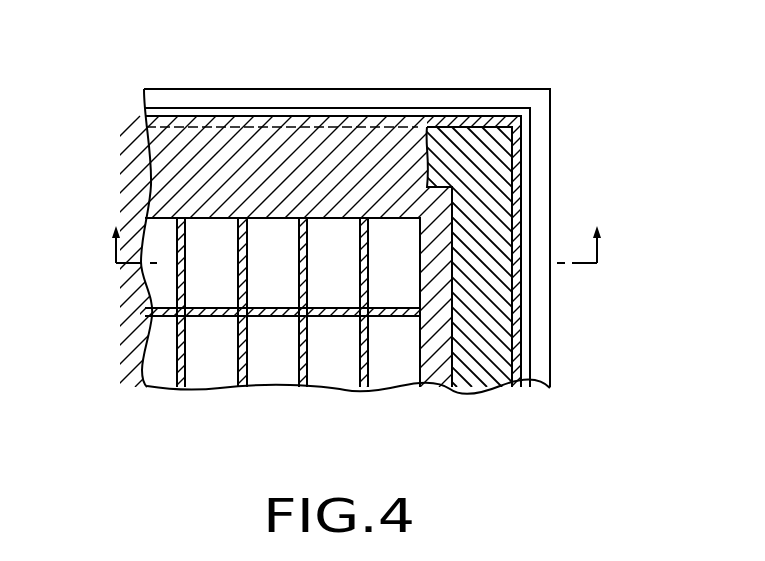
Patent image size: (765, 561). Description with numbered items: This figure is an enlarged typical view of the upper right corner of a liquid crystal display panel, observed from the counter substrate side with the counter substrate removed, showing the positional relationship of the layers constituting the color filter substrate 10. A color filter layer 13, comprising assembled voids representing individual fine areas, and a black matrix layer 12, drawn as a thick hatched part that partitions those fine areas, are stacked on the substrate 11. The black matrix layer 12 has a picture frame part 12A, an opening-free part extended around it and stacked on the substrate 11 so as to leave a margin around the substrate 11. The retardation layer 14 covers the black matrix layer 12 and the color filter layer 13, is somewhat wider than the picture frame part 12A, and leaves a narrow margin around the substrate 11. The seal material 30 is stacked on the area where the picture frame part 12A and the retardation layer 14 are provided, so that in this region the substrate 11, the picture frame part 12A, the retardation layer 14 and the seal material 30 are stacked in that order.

The color filter substrate 10 is at (124, 102).
The substrate 11 is at (526, 88).
The retardation layer 14 is at (268, 108).
The picture frame part 12A is at (175, 200).
The black matrix layer 12 is at (277, 317).
The color filter layer 13 is at (330, 353).
The seal material 30 is at (493, 153).